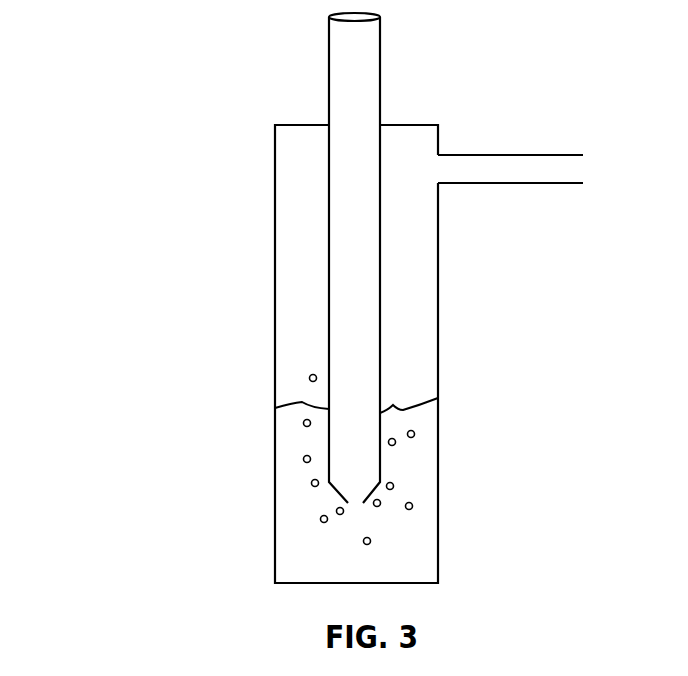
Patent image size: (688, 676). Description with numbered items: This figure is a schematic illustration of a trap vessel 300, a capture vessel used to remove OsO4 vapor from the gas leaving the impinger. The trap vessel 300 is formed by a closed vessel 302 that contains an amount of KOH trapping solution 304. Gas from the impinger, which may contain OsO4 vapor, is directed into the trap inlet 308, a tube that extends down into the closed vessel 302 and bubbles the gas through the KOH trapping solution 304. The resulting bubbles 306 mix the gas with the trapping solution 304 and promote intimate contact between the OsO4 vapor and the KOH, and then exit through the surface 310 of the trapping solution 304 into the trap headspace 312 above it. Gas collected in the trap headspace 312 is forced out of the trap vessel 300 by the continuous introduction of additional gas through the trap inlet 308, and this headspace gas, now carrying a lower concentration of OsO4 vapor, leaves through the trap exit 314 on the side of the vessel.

The trap vessel 300 is at (317, 298).
The closed vessel 302 is at (300, 354).
The KOH trapping solution 304 is at (308, 548).
The bubbles 306 is at (305, 460).
The trap inlet 308 is at (403, 258).
The surface 310 is at (316, 374).
The trap headspace 312 is at (474, 298).
The trap exit 314 is at (527, 145).